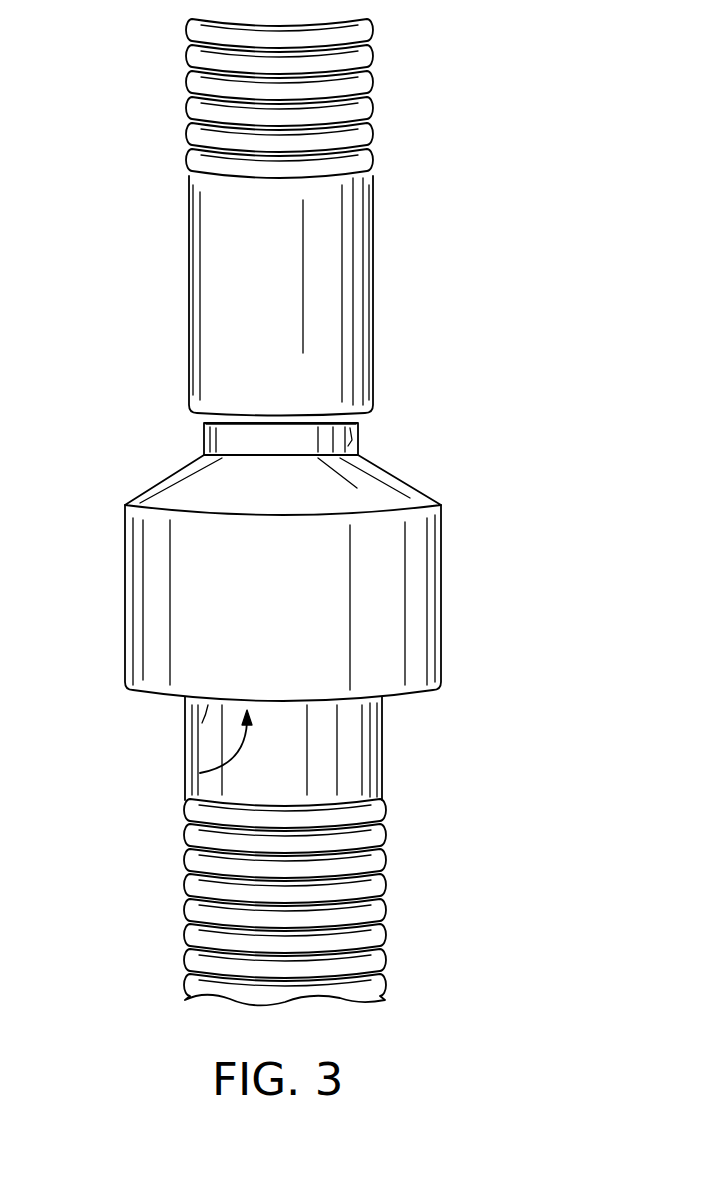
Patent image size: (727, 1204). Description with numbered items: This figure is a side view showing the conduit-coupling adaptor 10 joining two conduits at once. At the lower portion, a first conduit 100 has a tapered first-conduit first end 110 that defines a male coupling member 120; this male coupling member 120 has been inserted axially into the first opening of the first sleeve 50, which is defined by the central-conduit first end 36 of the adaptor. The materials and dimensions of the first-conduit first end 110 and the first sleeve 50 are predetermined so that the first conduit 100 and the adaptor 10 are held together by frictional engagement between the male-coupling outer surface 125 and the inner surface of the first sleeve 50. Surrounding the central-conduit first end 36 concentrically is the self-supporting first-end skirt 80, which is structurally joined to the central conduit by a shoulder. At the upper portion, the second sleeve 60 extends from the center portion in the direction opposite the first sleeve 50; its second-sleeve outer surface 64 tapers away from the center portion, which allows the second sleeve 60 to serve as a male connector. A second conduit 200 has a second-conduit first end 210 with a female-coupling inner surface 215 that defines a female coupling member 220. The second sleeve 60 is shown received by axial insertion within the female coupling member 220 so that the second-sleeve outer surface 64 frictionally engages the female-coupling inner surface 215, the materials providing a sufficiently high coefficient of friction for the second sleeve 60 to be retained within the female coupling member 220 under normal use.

The conduit-coupling adaptor 10 is at (420, 578).
The central-conduit first end 36 is at (200, 773).
The first coupling sleeve 50 is at (198, 732).
The second coupling sleeve 60 is at (205, 440).
The second-sleeve outer surface 64 is at (205, 425).
The first-end skirt 80 is at (133, 621).
The first conduit 100 is at (187, 866).
The first-conduit first end 110 is at (365, 785).
The male coupling member 120 is at (338, 747).
The male-coupling outer surface 125 is at (372, 717).
The second conduit 200 is at (187, 121).
The second-conduit first end 210 is at (207, 266).
The female-coupling inner surface 215 is at (362, 443).
The female coupling member 220 is at (343, 307).